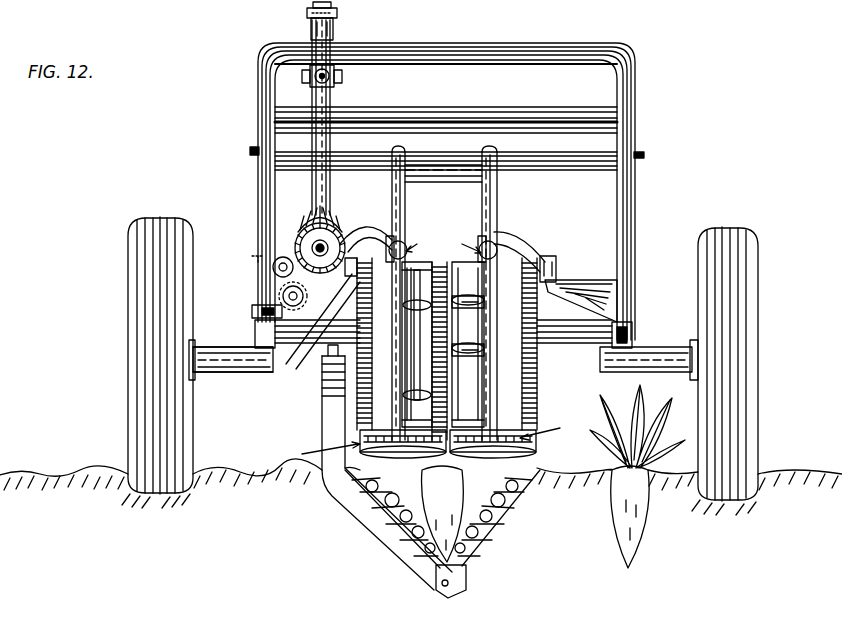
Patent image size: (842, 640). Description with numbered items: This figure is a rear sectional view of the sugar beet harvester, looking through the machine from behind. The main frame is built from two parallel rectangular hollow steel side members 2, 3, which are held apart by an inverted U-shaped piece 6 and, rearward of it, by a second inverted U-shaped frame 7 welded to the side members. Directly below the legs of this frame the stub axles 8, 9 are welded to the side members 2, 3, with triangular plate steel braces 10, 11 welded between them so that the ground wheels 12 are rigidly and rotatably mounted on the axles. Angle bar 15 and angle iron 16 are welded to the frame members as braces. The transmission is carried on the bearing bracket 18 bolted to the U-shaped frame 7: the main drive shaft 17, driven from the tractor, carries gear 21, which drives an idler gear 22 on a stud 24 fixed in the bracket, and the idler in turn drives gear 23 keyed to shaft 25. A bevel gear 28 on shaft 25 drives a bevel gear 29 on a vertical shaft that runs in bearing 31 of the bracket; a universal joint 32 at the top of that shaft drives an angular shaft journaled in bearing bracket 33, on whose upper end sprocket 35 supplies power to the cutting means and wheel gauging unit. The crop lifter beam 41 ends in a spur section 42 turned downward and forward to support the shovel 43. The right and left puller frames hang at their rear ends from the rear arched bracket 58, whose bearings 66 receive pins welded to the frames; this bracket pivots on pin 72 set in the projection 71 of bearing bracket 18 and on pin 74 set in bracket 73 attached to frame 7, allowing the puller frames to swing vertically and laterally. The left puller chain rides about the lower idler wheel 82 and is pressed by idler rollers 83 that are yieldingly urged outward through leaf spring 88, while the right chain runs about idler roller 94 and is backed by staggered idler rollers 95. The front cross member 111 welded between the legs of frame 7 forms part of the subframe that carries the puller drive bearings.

The side member 2 is at (626, 332).
The side member 3 is at (254, 332).
The inverted U-shaped piece 6 is at (594, 166).
The inverted U-shaped frame 7 is at (442, 45).
The stub axle 8 is at (254, 370).
The stub axle 9 is at (612, 374).
The triangular brace 10 is at (247, 352).
The triangular brace 11 is at (650, 344).
The ground wheel 12 is at (128, 247).
The angle bar 15 is at (250, 150).
The angle iron 16 is at (642, 154).
The main drive shaft 17 is at (284, 297).
The bearing bracket 18 is at (296, 258).
The gear 21 is at (252, 310).
The idler gear 22 is at (278, 262).
The gear 23 is at (394, 232).
The stud 24 is at (275, 267).
The shaft 25 is at (340, 230).
The bevel gear 28 is at (300, 240).
The bevel gear 29 is at (318, 218).
The bearing 31 is at (313, 182).
The universal joint 32 is at (344, 79).
The bearing bracket 33 is at (334, 30).
The sprocket 35 is at (306, 16).
The horizontal beam 41 is at (356, 394).
The spur section 42 is at (365, 558).
The shovel 43 is at (470, 575).
The rear arched bracket 58 is at (443, 293).
The bearing 66 is at (498, 193).
The projection 71 is at (337, 300).
The pin 72 is at (324, 313).
The bracket 73 is at (580, 282).
The pin 74 is at (553, 262).
The lower idler wheel 82 is at (336, 478).
The idler roller 83 is at (400, 414).
The leaf spring 88 is at (375, 390).
The idler roller 94 is at (500, 456).
The idler roller 95 is at (496, 373).
The front cross member 111 is at (506, 108).